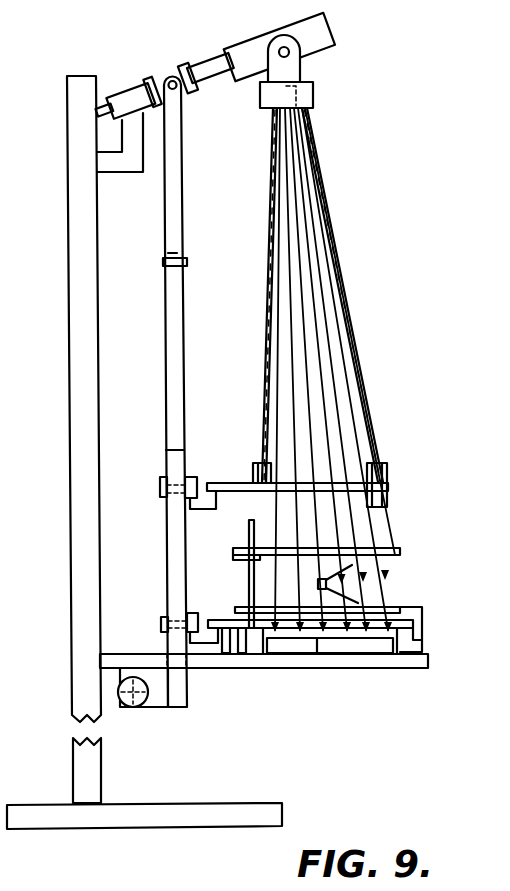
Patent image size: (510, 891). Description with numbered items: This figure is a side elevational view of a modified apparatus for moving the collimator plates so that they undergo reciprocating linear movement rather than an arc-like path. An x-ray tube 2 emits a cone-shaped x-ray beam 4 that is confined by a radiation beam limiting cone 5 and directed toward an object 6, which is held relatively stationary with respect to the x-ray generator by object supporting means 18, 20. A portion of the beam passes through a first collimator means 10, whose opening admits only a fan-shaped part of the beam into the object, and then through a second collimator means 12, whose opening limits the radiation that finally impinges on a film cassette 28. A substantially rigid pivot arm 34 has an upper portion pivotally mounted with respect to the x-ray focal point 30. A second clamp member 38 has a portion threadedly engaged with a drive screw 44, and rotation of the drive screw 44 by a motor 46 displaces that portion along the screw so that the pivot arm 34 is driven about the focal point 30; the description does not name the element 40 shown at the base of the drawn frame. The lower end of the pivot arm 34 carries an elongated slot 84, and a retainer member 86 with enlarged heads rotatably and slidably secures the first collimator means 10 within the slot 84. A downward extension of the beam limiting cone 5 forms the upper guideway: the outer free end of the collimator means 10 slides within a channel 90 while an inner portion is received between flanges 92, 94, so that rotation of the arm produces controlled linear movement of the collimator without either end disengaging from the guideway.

The x-ray tube 2 is at (313, 97).
The x-ray beam 4 is at (312, 268).
The radiation beam limiting cone 5 is at (358, 375).
The object 6 is at (350, 590).
The first collimator means 10 is at (238, 483).
The second collimator means 12 is at (256, 656).
The object supporting means 18 is at (393, 545).
The object supporting means 20 is at (265, 607).
The film cassette 28 is at (312, 639).
The x-ray focal point 30 is at (313, 89).
The pivot arm 34 is at (184, 172).
The second clamp member 38 is at (147, 700).
The foot 40 is at (85, 781).
The drive screw 44 is at (112, 690).
The motor 46 is at (133, 709).
The elongated slot 84 is at (166, 462).
The retainer member 86 is at (160, 486).
The channel 90 is at (386, 484).
The flange 92 is at (258, 468).
The flange 94 is at (262, 505).